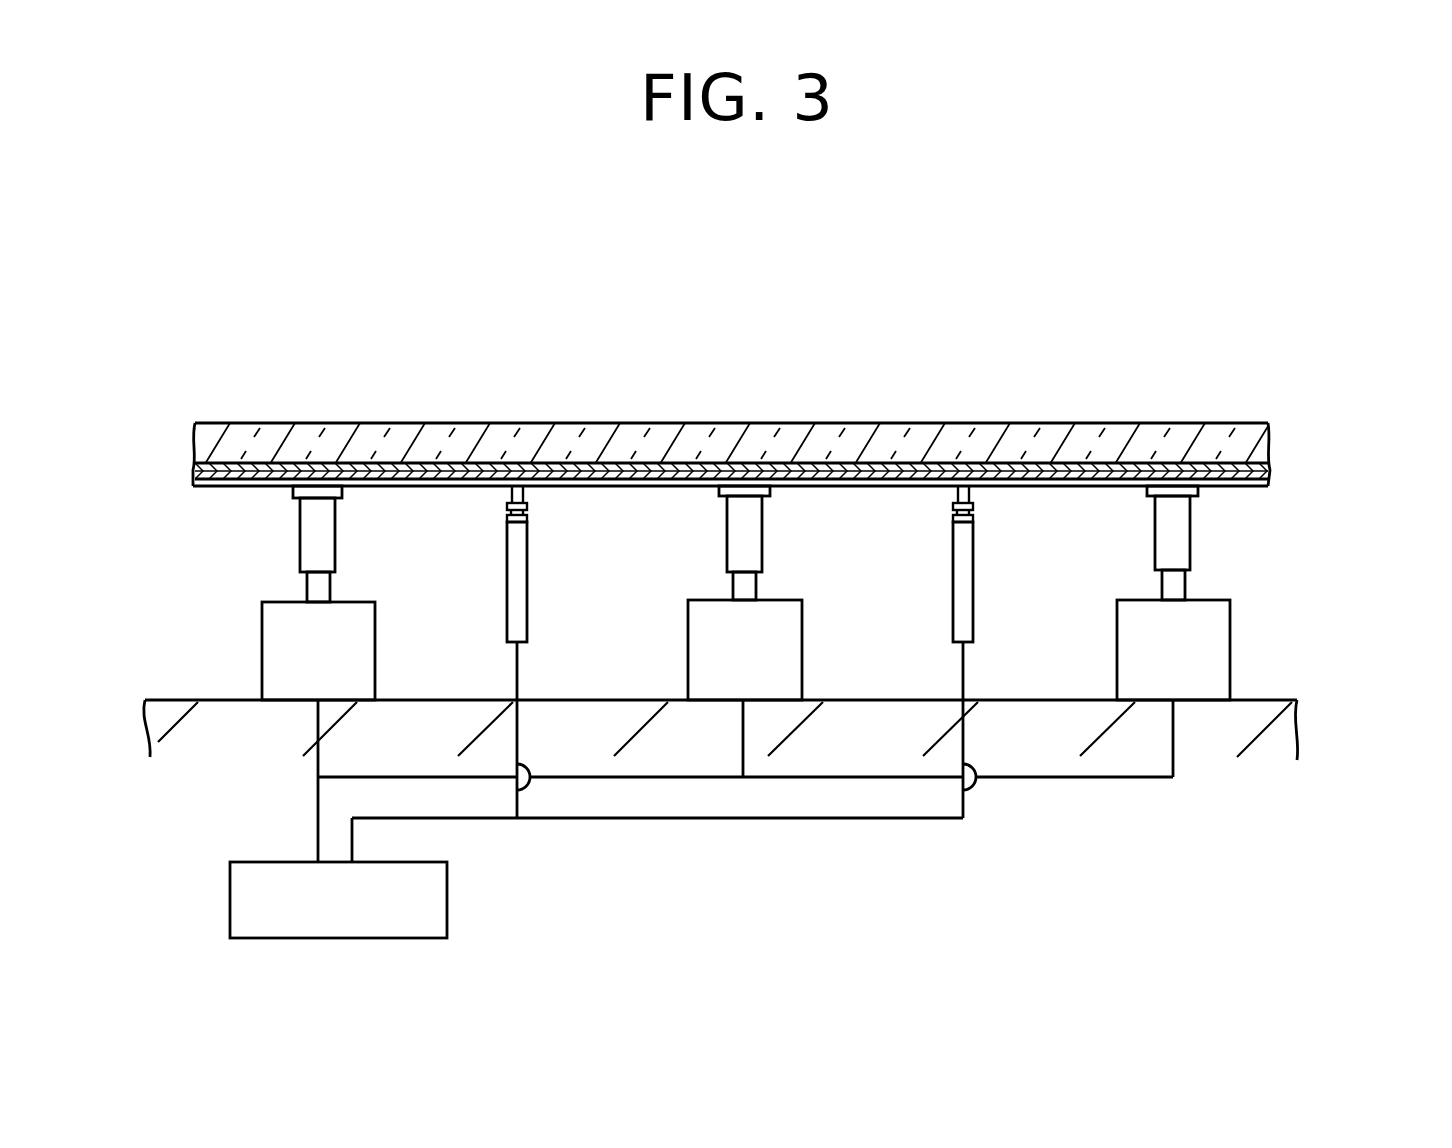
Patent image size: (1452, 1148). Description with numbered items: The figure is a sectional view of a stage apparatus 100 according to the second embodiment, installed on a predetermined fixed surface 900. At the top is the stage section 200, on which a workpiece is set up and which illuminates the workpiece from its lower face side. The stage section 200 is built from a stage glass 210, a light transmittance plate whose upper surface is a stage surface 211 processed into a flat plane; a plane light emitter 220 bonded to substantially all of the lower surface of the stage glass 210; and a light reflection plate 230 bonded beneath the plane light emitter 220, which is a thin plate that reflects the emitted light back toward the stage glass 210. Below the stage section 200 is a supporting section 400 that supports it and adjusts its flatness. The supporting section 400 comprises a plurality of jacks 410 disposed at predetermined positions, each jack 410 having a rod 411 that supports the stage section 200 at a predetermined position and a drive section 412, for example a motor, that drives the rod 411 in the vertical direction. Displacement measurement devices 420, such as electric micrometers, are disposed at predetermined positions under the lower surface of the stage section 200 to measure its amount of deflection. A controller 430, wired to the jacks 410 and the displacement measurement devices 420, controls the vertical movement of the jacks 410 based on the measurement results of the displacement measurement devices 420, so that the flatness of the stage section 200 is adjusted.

The stage apparatus 100 is at (812, 397).
The stage section 200 is at (812, 447).
The stage glass 210 is at (771, 398).
The stage surface 211 is at (1222, 423).
The plane light emitter 220 is at (1272, 467).
The light reflection plate 230 is at (1241, 486).
The supporting section 400 is at (806, 712).
The jack 410 is at (746, 593).
The rod 411 is at (1163, 518).
The drive section 412 is at (1128, 590).
The displacement measurement device 420 is at (523, 585).
The controller 430 is at (450, 895).
The fixed surface 900 is at (1274, 698).